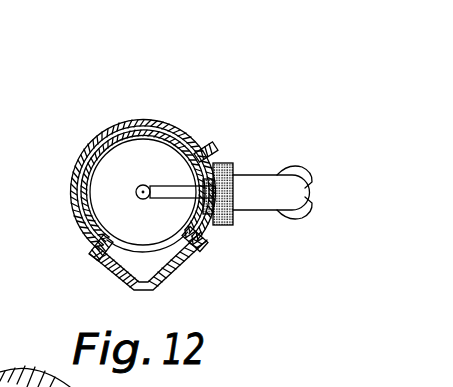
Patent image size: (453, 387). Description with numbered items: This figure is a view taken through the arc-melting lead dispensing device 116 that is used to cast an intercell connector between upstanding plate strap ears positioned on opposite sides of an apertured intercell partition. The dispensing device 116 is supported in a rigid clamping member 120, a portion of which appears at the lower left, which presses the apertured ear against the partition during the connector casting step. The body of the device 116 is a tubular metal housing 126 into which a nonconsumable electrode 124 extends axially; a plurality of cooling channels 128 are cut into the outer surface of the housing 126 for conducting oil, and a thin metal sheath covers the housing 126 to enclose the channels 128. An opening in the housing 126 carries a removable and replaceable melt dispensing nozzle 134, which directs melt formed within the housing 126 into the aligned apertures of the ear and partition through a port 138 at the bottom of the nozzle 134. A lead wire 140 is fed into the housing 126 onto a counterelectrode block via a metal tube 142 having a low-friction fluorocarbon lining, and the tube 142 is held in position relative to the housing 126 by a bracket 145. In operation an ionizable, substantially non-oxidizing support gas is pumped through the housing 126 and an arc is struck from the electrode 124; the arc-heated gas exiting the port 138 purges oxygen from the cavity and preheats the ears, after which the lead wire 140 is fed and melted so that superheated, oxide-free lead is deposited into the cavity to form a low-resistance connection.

The arc-melting lead dispensing device 116 is at (151, 104).
The clamping member 120 is at (18, 368).
The nonconsumable electrode 124 is at (137, 186).
The tubular metal housing 126 is at (127, 122).
The cooling channels 128 is at (98, 137).
The melt dispensing nozzle 134 is at (94, 249).
The port 138 is at (140, 287).
The lead wire 140 is at (170, 202).
The metal tube 142 is at (257, 186).
The bracket 145 is at (298, 218).